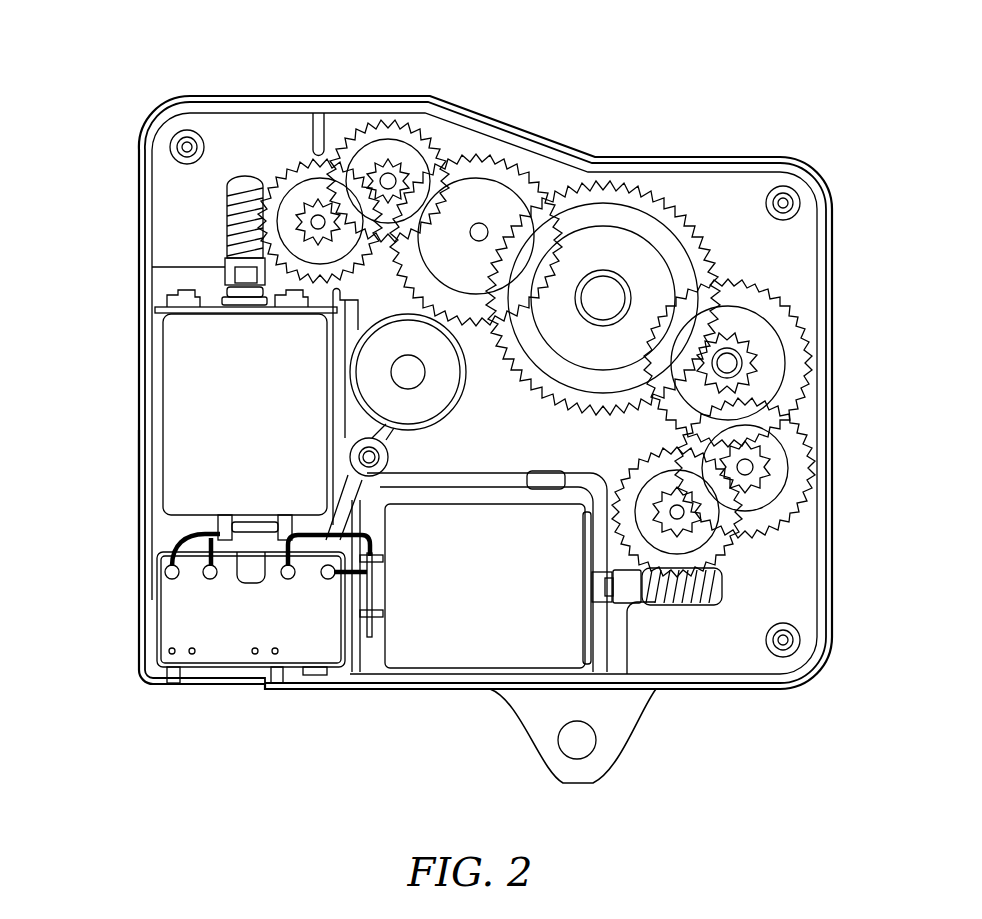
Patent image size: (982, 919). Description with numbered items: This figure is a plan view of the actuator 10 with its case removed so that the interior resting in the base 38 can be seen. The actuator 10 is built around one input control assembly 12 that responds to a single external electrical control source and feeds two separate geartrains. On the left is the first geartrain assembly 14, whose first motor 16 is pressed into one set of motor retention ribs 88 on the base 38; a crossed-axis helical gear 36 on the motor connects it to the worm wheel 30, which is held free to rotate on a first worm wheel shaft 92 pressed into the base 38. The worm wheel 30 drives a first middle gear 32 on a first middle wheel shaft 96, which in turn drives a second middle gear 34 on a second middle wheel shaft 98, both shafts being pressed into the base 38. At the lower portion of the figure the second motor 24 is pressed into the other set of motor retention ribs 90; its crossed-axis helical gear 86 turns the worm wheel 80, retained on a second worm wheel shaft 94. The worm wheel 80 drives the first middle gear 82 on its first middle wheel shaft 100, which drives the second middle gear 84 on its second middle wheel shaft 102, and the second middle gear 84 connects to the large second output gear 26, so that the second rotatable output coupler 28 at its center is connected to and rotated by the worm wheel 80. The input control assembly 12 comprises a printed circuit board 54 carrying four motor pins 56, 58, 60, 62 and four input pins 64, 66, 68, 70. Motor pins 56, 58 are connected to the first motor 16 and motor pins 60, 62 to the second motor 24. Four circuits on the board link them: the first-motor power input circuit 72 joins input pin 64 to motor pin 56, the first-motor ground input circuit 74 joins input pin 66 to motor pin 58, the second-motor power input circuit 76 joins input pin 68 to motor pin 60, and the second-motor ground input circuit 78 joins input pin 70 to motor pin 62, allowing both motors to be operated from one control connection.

The actuator 10 is at (93, 801).
The input control assembly 12 is at (128, 703).
The first geartrain assembly 14 is at (290, 70).
The first motor 16 is at (187, 377).
The second motor 24 is at (477, 633).
The second output gear 26 is at (707, 240).
The second rotatable output coupler 28 is at (623, 283).
The worm wheel 30 is at (277, 177).
The first middle gear 32 is at (350, 128).
The second middle gear 34 is at (506, 152).
The crossed-axis helical gear 36 is at (228, 204).
The base 38 is at (137, 473).
The printed circuit board 54 is at (172, 622).
The motor pin 56 is at (220, 510).
The motor pin 58 is at (285, 530).
The motor pin 60 is at (381, 560).
The motor pin 62 is at (383, 622).
The input pin 64 is at (175, 652).
The input pin 66 is at (196, 652).
The input pin 68 is at (254, 652).
The input pin 70 is at (274, 652).
The first-motor power input circuit 72 is at (165, 575).
The first-motor ground input circuit 74 is at (165, 595).
The second-motor power input circuit 76 is at (288, 580).
The second-motor ground input circuit 78 is at (334, 582).
The worm wheel 80 is at (708, 545).
The first middle gear 82 is at (786, 516).
The second middle gear 84 is at (804, 400).
The crossed-axis helical gear 86 is at (666, 604).
The motor retention ribs 88 is at (346, 310).
The motor retention ribs 90 is at (575, 478).
The first worm wheel shaft 92 is at (318, 218).
The second worm wheel shaft 94 is at (684, 515).
The first middle wheel shaft 96 is at (398, 170).
The second middle wheel shaft 98 is at (488, 230).
The first middle wheel shaft 100 is at (758, 470).
The second middle wheel shaft 102 is at (737, 356).